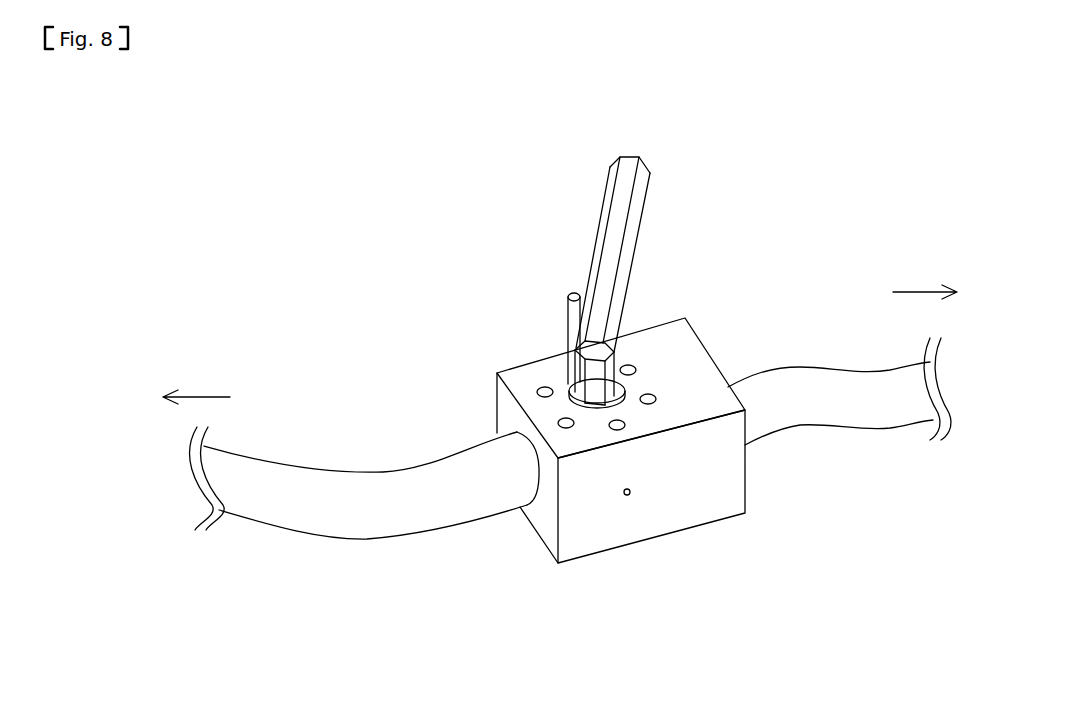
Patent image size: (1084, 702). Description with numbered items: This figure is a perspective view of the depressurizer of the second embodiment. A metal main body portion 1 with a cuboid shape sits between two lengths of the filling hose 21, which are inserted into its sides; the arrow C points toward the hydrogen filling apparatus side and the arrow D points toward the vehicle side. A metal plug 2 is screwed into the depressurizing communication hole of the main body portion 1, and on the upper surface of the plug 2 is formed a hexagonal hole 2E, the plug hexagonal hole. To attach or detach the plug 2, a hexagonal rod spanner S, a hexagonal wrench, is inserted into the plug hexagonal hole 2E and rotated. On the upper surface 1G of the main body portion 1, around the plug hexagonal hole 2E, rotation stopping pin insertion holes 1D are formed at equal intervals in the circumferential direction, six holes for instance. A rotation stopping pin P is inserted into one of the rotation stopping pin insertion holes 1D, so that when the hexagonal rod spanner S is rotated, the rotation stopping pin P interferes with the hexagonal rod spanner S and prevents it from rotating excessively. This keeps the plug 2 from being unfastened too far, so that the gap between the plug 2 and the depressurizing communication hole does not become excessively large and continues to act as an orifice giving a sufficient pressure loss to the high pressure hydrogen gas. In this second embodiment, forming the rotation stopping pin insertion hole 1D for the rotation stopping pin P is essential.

The main body portion 1 is at (648, 440).
The rotation stopping pin insertion holes 1D is at (628, 368).
The upper surface 1G is at (698, 398).
The plug 2 is at (667, 438).
The hexagonal hole 2E is at (610, 387).
The filling hose 21 is at (433, 457).
The hexagonal rod spanner S is at (643, 183).
The rotation stopping pin P is at (568, 307).
The arrow D is at (196, 388).
The arrow C is at (925, 282).